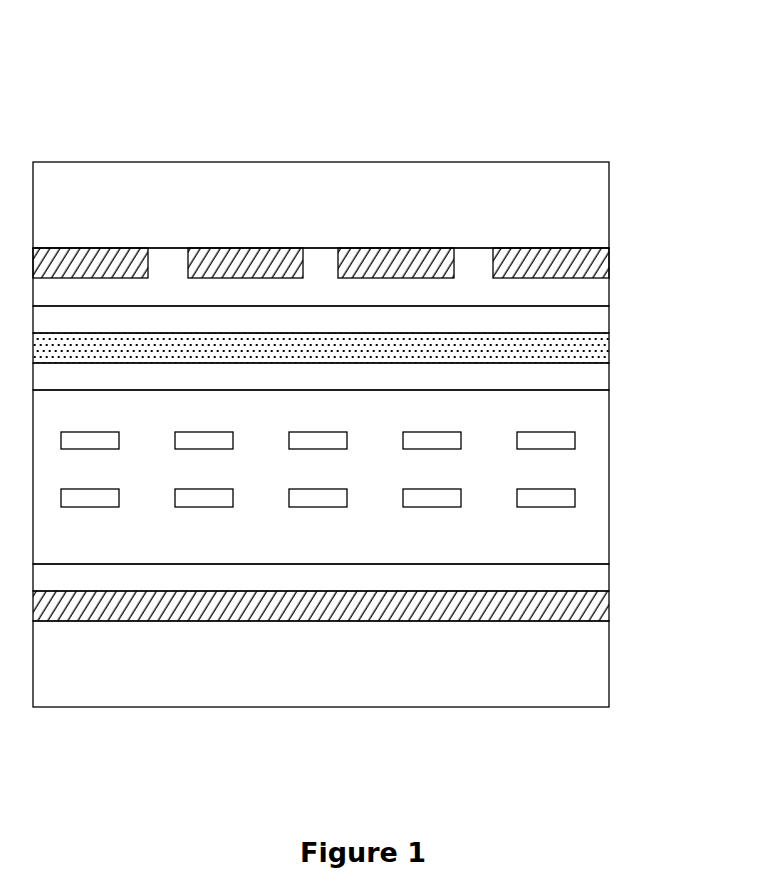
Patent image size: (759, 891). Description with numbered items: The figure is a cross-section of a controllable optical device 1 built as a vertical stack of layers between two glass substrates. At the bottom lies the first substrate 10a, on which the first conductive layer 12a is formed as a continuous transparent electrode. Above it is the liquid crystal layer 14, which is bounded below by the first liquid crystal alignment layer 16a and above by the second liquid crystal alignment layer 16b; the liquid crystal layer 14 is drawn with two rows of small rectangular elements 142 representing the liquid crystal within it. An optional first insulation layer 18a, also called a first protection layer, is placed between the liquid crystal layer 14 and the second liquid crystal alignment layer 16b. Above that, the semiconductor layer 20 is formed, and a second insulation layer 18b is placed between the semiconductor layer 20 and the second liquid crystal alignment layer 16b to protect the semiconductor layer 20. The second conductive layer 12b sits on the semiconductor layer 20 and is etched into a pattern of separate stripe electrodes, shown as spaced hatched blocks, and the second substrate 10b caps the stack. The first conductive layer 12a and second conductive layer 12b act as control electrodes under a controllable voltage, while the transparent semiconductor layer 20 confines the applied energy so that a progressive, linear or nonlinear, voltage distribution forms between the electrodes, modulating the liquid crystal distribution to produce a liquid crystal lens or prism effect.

The optical device 1 is at (577, 98).
The second substrate 10b is at (343, 217).
The semiconductor layer 20 is at (335, 301).
The second conductive layer 12b is at (575, 265).
The second insulation layer 18b is at (573, 318).
The second liquid crystal alignment layer 16b is at (575, 345).
The first insulation layer 18a is at (573, 381).
The liquid crystal layer 14 is at (585, 472).
The embedded elements 142 is at (560, 439).
The first liquid crystal alignment layer 16a is at (573, 575).
The first conductive layer 12a is at (575, 611).
The first substrate 10a is at (342, 676).